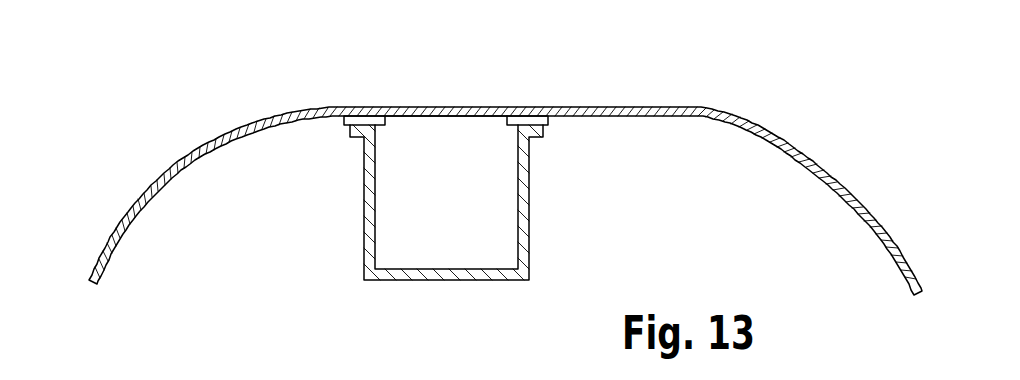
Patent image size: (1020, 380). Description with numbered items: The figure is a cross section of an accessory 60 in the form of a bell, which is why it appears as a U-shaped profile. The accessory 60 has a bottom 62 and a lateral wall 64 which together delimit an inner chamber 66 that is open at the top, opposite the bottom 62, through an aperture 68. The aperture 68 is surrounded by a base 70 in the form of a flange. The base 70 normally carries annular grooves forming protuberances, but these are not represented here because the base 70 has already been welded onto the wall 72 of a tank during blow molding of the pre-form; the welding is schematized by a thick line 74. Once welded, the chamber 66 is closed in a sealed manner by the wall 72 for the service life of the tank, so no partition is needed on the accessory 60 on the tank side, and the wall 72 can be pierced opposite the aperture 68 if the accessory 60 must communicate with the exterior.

The accessory 60 is at (444, 241).
The bottom 62 is at (440, 273).
The lateral wall 64 is at (523, 210).
The inner chamber 66 is at (475, 182).
The aperture 68 is at (462, 132).
The base 70 is at (527, 118).
The wall 72 is at (155, 182).
The thick line 74 is at (372, 121).